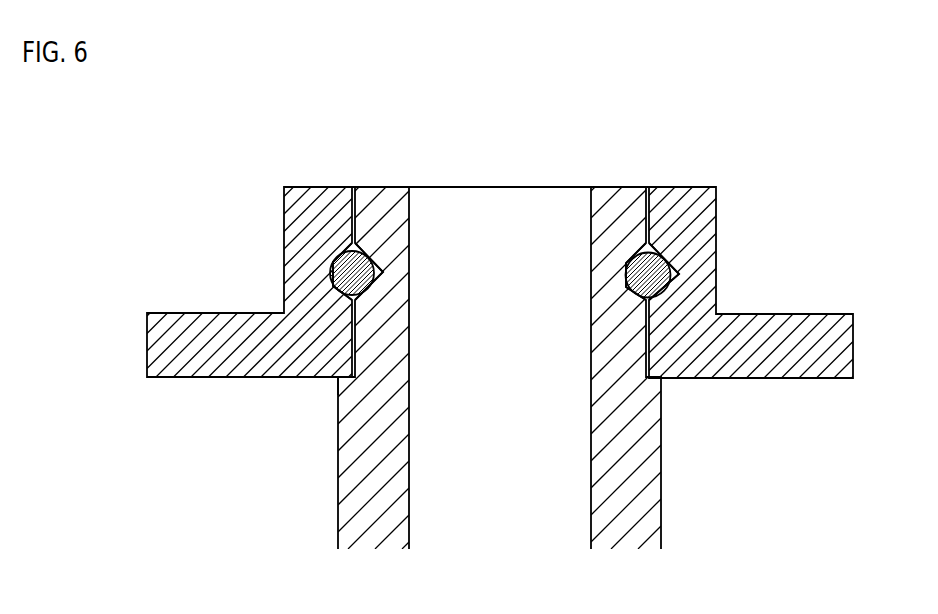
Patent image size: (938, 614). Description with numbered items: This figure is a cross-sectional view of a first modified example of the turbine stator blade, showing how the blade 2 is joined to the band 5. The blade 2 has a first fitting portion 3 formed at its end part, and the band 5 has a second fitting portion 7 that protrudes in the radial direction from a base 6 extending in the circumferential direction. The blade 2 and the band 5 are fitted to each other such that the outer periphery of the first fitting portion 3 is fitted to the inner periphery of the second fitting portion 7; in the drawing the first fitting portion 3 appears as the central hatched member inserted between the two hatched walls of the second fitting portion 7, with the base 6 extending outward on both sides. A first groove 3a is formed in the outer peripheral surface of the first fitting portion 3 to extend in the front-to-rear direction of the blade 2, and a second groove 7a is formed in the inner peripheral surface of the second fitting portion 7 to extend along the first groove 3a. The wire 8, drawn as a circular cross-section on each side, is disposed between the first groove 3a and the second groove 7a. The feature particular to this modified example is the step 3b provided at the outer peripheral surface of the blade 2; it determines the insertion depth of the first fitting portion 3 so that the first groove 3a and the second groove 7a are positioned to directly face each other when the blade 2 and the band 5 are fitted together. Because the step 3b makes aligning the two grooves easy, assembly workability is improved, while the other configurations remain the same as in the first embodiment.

The blade 2 is at (573, 170).
The first fitting portion 3 is at (390, 208).
The first groove 3a is at (385, 270).
The step 3b is at (343, 367).
The band 5 is at (168, 305).
The base 6 is at (212, 322).
The second fitting portion 7 is at (293, 207).
The second groove 7a is at (327, 268).
The wire 8 is at (373, 290).